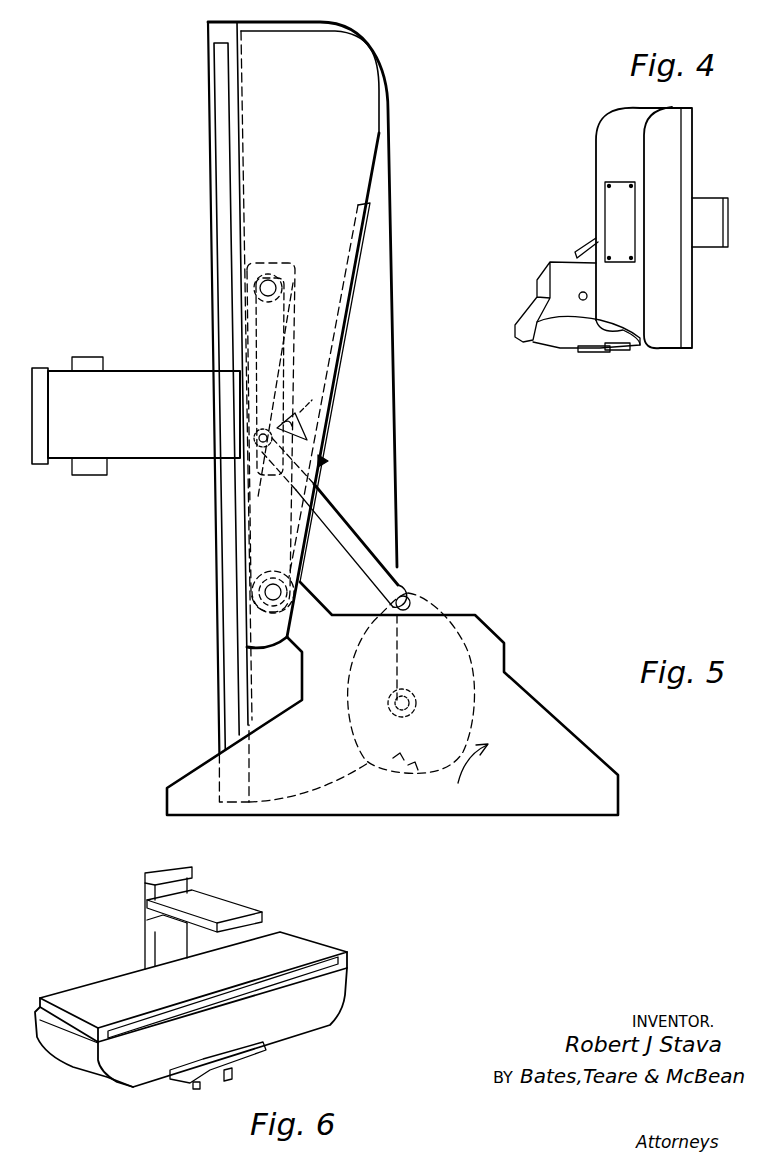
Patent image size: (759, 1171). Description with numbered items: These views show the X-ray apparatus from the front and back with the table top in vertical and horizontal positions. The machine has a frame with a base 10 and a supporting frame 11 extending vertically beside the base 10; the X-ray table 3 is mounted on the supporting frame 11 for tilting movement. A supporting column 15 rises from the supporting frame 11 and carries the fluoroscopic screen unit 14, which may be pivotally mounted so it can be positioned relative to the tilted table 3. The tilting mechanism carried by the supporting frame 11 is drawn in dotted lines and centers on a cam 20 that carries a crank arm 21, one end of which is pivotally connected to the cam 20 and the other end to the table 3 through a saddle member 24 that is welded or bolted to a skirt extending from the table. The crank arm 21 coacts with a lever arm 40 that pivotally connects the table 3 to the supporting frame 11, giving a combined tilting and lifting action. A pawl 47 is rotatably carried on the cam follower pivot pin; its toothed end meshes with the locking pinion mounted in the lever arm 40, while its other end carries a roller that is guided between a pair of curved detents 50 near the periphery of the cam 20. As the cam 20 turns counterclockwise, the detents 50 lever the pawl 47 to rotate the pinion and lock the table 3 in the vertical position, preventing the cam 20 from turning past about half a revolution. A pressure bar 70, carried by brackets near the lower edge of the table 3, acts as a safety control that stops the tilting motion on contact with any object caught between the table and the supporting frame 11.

In FIG. 5, the X-ray table 3 is at (208, 73).
In FIG. 4, the X-ray table 3 is at (694, 122).
In FIG. 6, the X-ray table 3 is at (307, 938).
In FIG. 4, the base 10 is at (568, 348).
In FIG. 6, the base 10 is at (267, 1050).
In FIG. 5, the supporting frame 11 is at (570, 732).
In FIG. 4, the supporting frame 11 is at (535, 291).
In FIG. 6, the fluoroscopic screen unit 14 is at (240, 898).
In FIG. 5, the supporting column 15 is at (130, 466).
In FIG. 5, the cam 20 is at (474, 720).
In FIG. 5, the crank arm 21 is at (366, 538).
In FIG. 5, the saddle member 24 is at (266, 260).
In FIG. 5, the lever arm 40 is at (288, 329).
In FIG. 5, the pawl 47 is at (298, 410).
In FIG. 5, the curved detents 50 is at (418, 765).
In FIG. 5, the pressure bar 70 is at (357, 272).